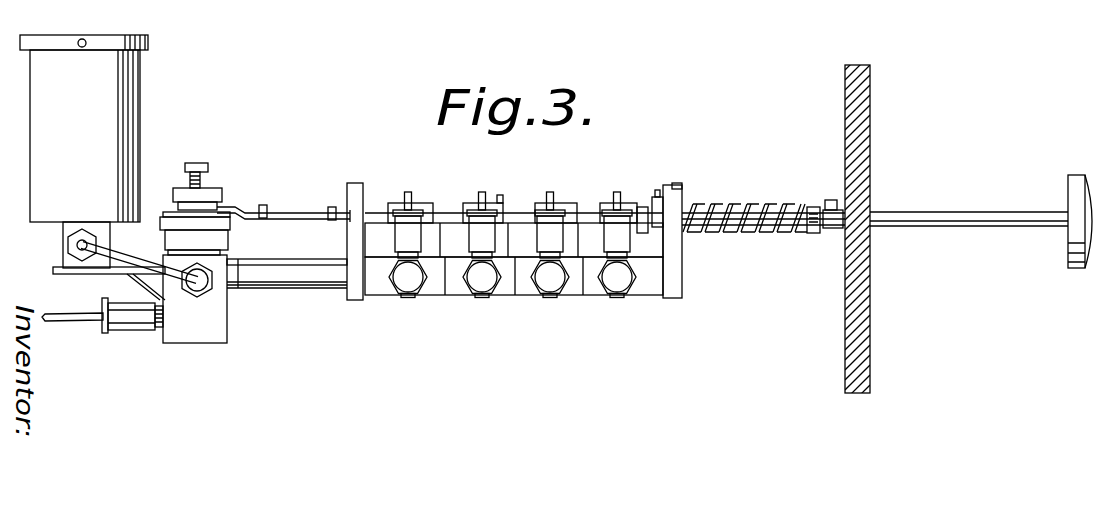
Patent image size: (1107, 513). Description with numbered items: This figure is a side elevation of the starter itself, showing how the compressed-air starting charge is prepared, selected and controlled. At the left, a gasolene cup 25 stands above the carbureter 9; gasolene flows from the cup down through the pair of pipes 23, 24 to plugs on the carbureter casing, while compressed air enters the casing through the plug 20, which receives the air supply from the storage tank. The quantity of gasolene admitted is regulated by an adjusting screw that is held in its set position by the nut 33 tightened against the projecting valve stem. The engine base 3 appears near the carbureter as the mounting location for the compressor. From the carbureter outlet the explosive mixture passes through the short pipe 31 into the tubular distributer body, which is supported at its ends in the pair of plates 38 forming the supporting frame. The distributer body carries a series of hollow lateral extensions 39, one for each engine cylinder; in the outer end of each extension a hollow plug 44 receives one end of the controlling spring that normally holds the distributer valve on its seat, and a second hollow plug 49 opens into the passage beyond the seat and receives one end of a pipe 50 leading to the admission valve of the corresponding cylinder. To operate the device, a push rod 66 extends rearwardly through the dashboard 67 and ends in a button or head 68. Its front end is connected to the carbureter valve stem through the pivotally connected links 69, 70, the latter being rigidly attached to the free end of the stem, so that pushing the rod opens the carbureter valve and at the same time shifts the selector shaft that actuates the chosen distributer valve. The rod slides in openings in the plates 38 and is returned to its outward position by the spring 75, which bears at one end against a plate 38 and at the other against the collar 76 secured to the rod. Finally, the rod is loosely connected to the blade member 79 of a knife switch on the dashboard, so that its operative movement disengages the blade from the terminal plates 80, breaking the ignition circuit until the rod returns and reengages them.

The engine base 3 is at (62, 315).
The carbureter 9 is at (218, 318).
The plug 20 is at (150, 331).
The pipe 23 is at (128, 288).
The pipe 24 is at (78, 246).
The gasolene cup 25 is at (132, 93).
The pipe 31 is at (293, 284).
The nut 33 is at (205, 196).
The plates 38 is at (347, 246).
The hollow lateral extensions 39 is at (378, 290).
The hollow plug 44 is at (405, 286).
The hollow plug 49 is at (398, 233).
The pipe 50 is at (479, 194).
The push rod 66 is at (775, 212).
The dashboard 67 is at (862, 132).
The button or head 68 is at (1068, 195).
The link 69 is at (298, 212).
The link 70 is at (243, 208).
The spring 75 is at (722, 210).
The collar 76 is at (813, 207).
The blade member 79 is at (834, 228).
The terminal plates 80 is at (840, 201).